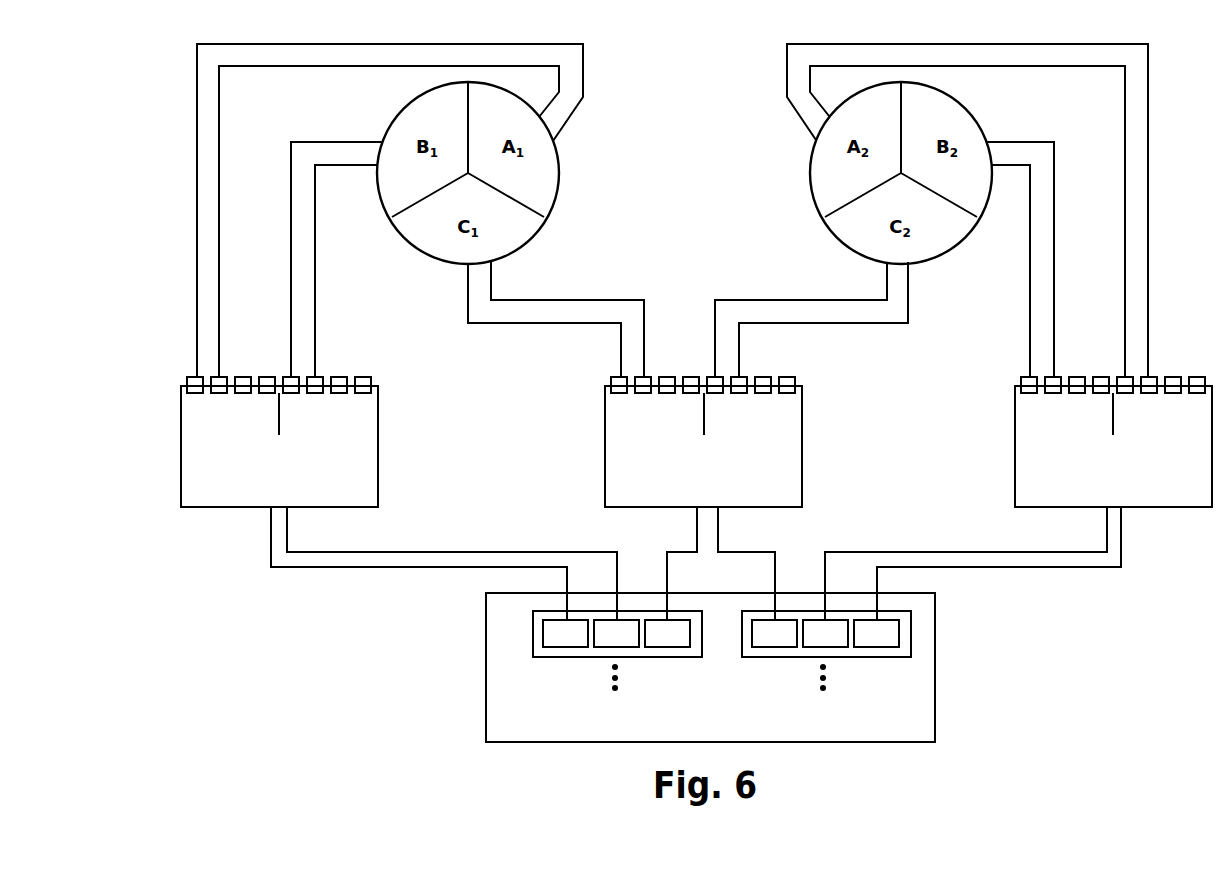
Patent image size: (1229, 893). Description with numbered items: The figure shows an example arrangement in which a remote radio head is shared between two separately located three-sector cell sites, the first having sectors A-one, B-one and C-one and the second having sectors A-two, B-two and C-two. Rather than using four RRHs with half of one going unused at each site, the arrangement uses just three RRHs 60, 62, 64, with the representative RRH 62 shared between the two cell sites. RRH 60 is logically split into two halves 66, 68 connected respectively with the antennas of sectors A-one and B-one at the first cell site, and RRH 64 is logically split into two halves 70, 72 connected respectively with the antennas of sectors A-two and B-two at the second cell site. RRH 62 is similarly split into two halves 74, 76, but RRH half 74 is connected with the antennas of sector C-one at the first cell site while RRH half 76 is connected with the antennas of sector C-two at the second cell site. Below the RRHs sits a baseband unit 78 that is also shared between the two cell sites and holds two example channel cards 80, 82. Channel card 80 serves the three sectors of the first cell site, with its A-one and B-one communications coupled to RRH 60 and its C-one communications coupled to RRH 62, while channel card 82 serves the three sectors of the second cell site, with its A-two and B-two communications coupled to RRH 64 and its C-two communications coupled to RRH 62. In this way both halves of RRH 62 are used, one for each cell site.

The RRH 60 is at (383, 498).
The RRH 62 is at (688, 498).
The RRH 64 is at (1018, 498).
The RRH half 66 is at (222, 428).
The RRH half 68 is at (317, 428).
The RRH half 70 is at (1056, 428).
The RRH half 72 is at (1152, 428).
The RRH half 74 is at (647, 428).
The RRH half 76 is at (743, 428).
The baseband unit 78 is at (694, 667).
The channel card 80 is at (532, 627).
The channel card 82 is at (741, 627).